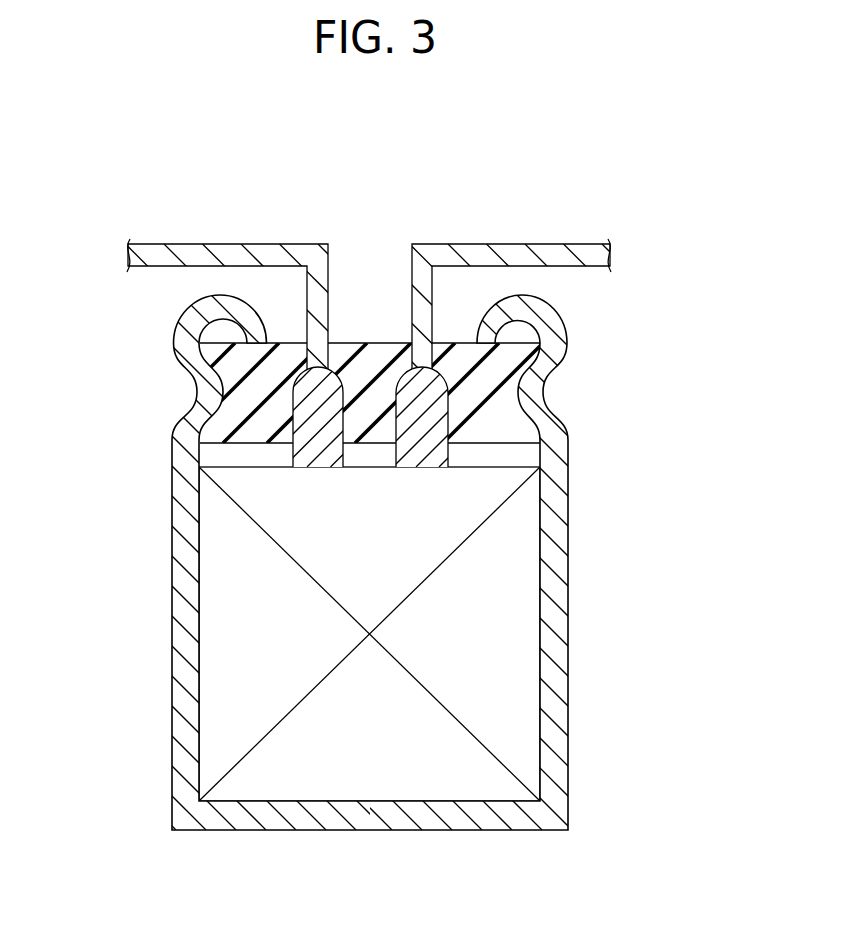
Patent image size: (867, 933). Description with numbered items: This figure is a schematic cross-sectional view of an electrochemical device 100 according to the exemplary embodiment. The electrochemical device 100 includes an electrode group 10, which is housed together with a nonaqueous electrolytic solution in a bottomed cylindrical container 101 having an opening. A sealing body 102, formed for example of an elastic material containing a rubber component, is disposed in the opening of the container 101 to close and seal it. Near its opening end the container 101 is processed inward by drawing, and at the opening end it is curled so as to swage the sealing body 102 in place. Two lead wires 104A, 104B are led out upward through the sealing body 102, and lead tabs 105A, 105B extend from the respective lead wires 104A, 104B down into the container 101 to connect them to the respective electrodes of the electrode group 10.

The electrochemical device 100 is at (601, 128).
The electrode group 10 is at (242, 613).
The container 101 is at (553, 623).
The sealing body 102 is at (481, 373).
The lead wire 104A is at (228, 258).
The lead wire 104B is at (552, 255).
The lead tab 105A is at (320, 406).
The lead tab 105B is at (415, 436).